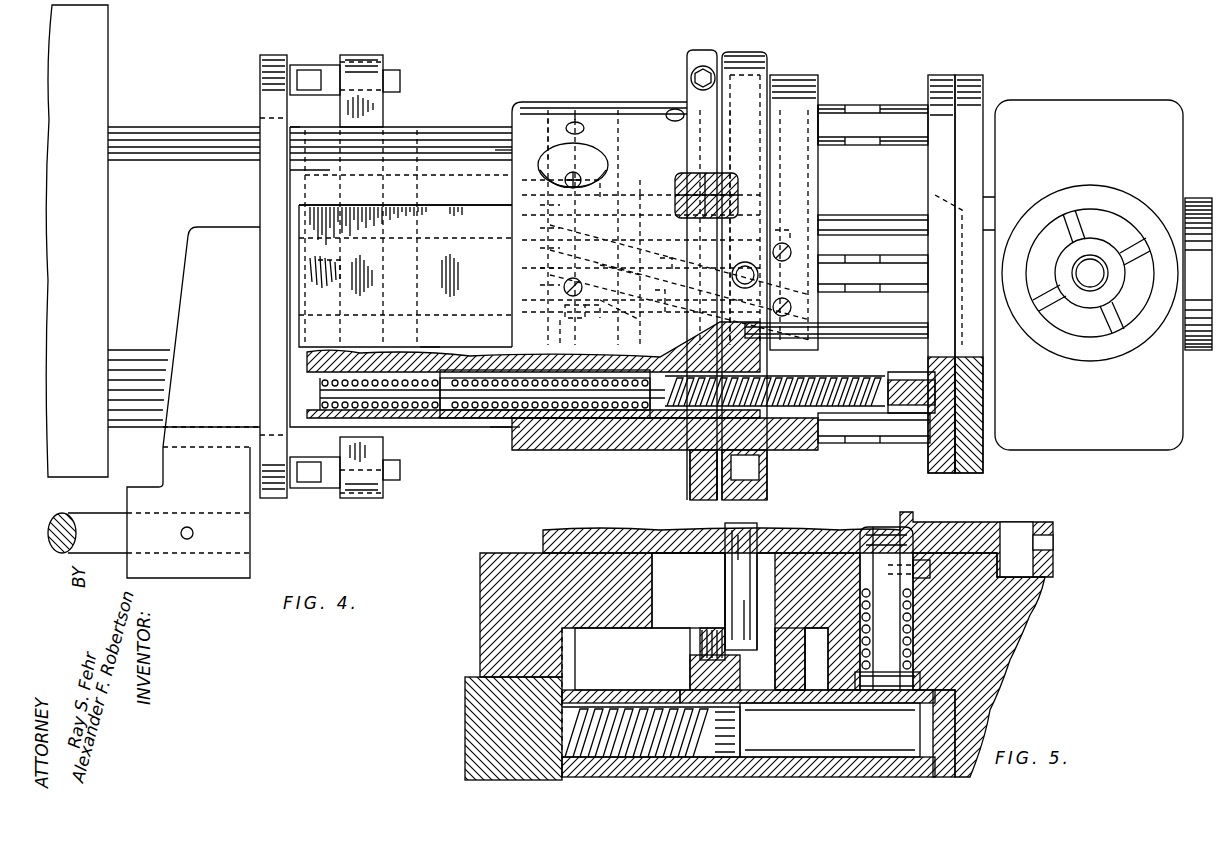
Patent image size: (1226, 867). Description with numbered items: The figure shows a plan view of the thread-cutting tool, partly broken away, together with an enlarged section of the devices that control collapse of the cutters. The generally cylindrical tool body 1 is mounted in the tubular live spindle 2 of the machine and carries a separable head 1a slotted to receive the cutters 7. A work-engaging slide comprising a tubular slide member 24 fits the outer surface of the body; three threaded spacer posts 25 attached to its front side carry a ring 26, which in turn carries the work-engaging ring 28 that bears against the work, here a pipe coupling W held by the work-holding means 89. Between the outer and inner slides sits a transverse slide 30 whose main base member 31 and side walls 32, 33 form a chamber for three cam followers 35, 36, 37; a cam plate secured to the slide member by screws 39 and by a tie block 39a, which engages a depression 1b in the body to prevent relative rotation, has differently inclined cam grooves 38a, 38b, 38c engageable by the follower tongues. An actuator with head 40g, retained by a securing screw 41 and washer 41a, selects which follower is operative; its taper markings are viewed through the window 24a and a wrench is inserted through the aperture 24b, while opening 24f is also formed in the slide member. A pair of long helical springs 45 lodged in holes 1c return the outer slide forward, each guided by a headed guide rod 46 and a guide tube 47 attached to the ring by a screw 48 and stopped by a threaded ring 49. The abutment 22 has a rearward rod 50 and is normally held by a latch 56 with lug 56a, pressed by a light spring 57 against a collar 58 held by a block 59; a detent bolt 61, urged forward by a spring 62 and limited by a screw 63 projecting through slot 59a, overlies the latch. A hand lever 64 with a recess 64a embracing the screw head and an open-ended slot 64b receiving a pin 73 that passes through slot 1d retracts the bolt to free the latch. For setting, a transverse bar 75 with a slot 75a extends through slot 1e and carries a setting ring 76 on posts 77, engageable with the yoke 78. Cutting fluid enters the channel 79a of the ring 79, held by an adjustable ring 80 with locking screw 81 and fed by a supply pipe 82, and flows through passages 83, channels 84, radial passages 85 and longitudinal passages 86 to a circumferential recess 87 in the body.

In FIG. 4, the tool body 1 is at (470, 127).
In FIG. 5, the tool body 1 is at (480, 637).
In FIG. 4, the head 1a is at (868, 215).
In FIG. 4, the depression 1b is at (446, 347).
In FIG. 4, the holes 1c is at (500, 428).
In FIG. 5, the slot 1d is at (650, 583).
In FIG. 4, the slot 1e is at (412, 104).
In FIG. 4, the live spindle 2 is at (172, 127).
In FIG. 5, the live spindle 2 is at (466, 730).
In FIG. 4, the cutters 7 is at (935, 200).
In FIG. 4, the abutment 22 is at (430, 242).
In FIG. 5, the abutment 22 is at (575, 532).
In FIG. 4, the tubular slide member 24 is at (620, 102).
In FIG. 4, the window 24a is at (568, 145).
In FIG. 4, the aperture 24b is at (576, 120).
In FIG. 4, the opening 24f is at (675, 109).
In FIG. 4, the spacer posts 25 is at (870, 105).
In FIG. 4, the ring 26 is at (934, 75).
In FIG. 4, the work-engaging ring 28 is at (975, 75).
In FIG. 4, the transverse slide 30 is at (612, 320).
In FIG. 4, the main base member 31 is at (525, 284).
In FIG. 4, the side wall 32 is at (525, 250).
In FIG. 4, the side wall 33 is at (615, 262).
In FIG. 4, the cam follower 35 is at (520, 215).
In FIG. 4, the cam follower 36 is at (525, 236).
In FIG. 4, the cam follower 37 is at (525, 266).
In FIG. 4, the cam groove 38a is at (782, 242).
In FIG. 4, the cam groove 38b is at (672, 274).
In FIG. 4, the cam groove 38c is at (665, 312).
In FIG. 4, the screws 39 is at (563, 289).
In FIG. 4, the tie block 39a is at (512, 333).
In FIG. 4, the actuator head 40g is at (598, 165).
In FIG. 4, the securing screw 41 is at (570, 318).
In FIG. 4, the washer 41a is at (597, 318).
In FIG. 4, the helical springs 45 is at (470, 412).
In FIG. 4, the guide rod 46 is at (455, 418).
In FIG. 4, the guide tube 47 is at (797, 412).
In FIG. 4, the screw 48 is at (912, 413).
In FIG. 4, the threaded ring 49 is at (748, 418).
In FIG. 4, the rod 50 is at (318, 290).
In FIG. 5, the latch 56 is at (860, 560).
In FIG. 5, the lug 56a is at (930, 570).
In FIG. 5, the helical spring 57 is at (913, 607).
In FIG. 5, the collar 58 is at (920, 672).
In FIG. 5, the block 59 is at (625, 777).
In FIG. 5, the slot 59a is at (680, 692).
In FIG. 5, the detent bolt 61 is at (830, 730).
In FIG. 5, the helical spring 62 is at (592, 710).
In FIG. 5, the screw 63 is at (805, 655).
In FIG. 5, the hand lever 64 is at (808, 636).
In FIG. 5, the recess 64a is at (690, 665).
In FIG. 5, the slot 64b is at (700, 640).
In FIG. 5, the pin 73 is at (725, 572).
In FIG. 4, the transverse bar 75 is at (372, 55).
In FIG. 4, the slot 75a is at (345, 282).
In FIG. 4, the setting ring 76 is at (270, 55).
In FIG. 4, the posts 77 is at (330, 65).
In FIG. 4, the yoke 78 is at (193, 300).
In FIG. 4, the ring 79 is at (750, 52).
In FIG. 4, the channel 79a is at (780, 78).
In FIG. 4, the adjustable ring 80 is at (687, 62).
In FIG. 4, the locking screw 81 is at (710, 66).
In FIG. 4, the fluid supply pipe 82 is at (755, 282).
In FIG. 4, the passages 83 is at (820, 107).
In FIG. 4, the channels 84 is at (608, 115).
In FIG. 4, the radial passages 85 is at (520, 160).
In FIG. 4, the longitudinal passages 86 is at (636, 195).
In FIG. 4, the circumferential recess 87 is at (706, 173).
In FIG. 4, the work-holding means 89 is at (1075, 105).
In FIG. 4, the pipe coupling W is at (995, 350).